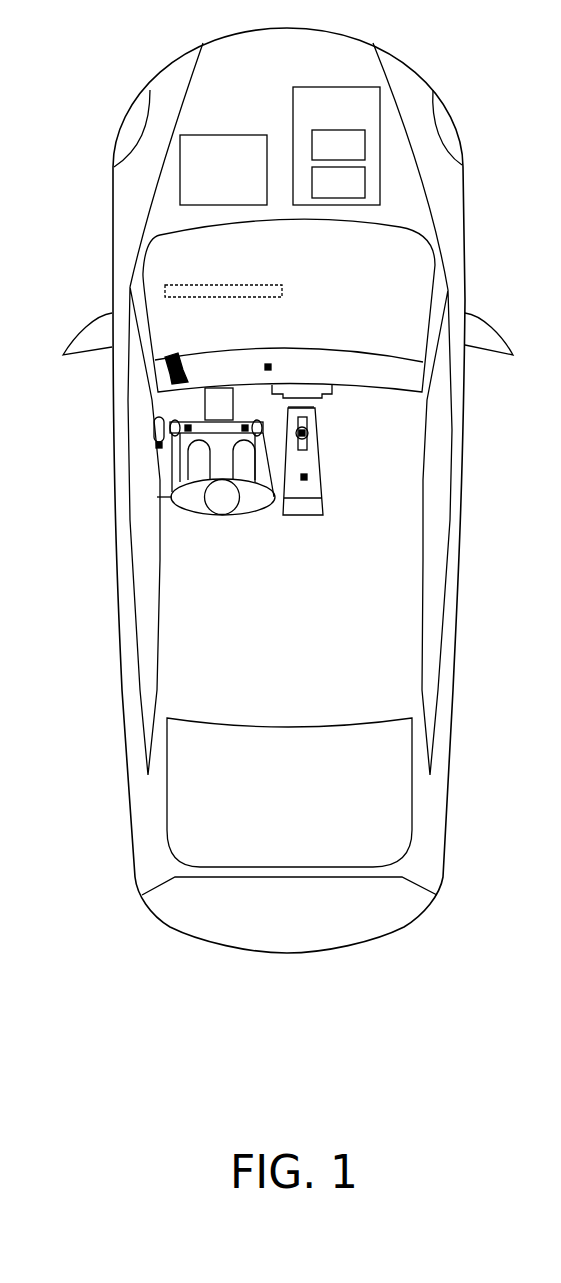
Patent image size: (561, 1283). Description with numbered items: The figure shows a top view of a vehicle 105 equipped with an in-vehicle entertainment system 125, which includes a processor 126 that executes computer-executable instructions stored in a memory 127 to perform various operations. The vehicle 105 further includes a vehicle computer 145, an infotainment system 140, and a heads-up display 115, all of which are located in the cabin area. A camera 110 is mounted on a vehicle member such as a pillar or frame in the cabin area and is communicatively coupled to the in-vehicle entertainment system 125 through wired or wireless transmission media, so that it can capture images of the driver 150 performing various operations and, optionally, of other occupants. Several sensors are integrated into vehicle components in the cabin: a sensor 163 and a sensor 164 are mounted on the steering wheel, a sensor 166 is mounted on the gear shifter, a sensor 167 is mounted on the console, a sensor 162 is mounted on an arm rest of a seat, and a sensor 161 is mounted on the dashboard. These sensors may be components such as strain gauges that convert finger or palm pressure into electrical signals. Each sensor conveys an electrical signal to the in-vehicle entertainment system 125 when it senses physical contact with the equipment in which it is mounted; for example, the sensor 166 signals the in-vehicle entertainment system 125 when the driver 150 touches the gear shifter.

The vehicle 105 is at (94, 74).
The camera 110 is at (175, 353).
The heads-up display 115 is at (306, 287).
The in-vehicle entertainment system 125 is at (330, 120).
The processor 126 is at (320, 157).
The memory 127 is at (320, 194).
The infotainment system 140 is at (293, 383).
The vehicle computer 145 is at (203, 182).
The driver 150 is at (247, 513).
The sensor 161 is at (265, 367).
The sensor 162 is at (158, 445).
The sensor 163 is at (188, 427).
The sensor 164 is at (245, 427).
The sensor 166 is at (308, 432).
The sensor 167 is at (306, 477).